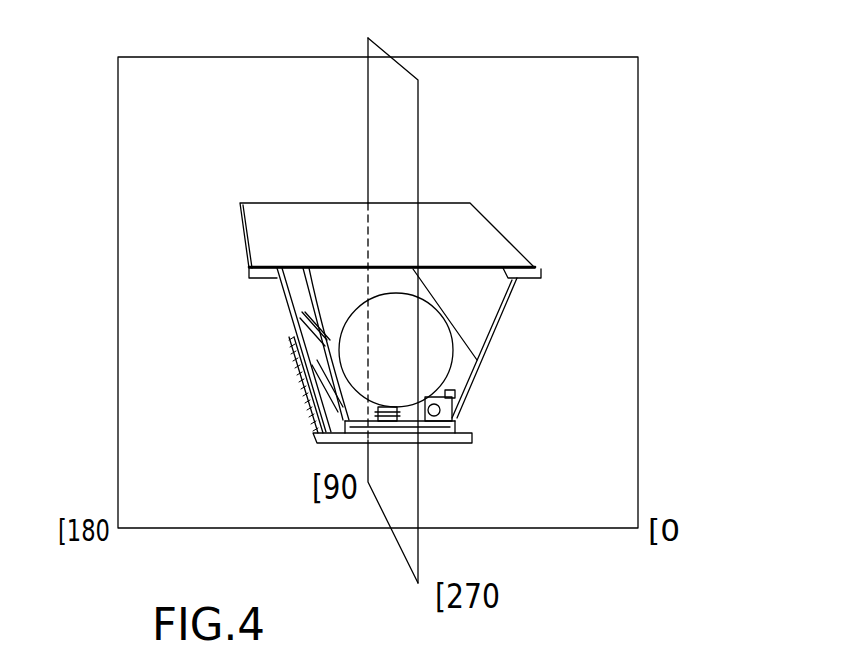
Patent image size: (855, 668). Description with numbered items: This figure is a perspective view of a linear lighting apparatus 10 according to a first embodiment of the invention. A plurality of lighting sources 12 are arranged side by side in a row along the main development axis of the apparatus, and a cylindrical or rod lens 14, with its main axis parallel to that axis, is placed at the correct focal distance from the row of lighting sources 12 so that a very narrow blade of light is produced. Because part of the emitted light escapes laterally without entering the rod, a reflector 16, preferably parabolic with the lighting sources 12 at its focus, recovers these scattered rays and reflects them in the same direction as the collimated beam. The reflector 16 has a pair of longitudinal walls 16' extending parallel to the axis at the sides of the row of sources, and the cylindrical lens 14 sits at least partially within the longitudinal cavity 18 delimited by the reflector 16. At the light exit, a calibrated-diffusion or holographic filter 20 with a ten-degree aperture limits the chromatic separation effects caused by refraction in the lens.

The linear apparatus 10 is at (492, 378).
The lighting sources 12 is at (403, 428).
The cylindrical lens 14 is at (427, 328).
The reflector 16 is at (176, 382).
The longitudinal walls 16' is at (386, 344).
The longitudinal cavity 18 is at (435, 280).
The calibrated-diffusion filter 20 is at (303, 225).